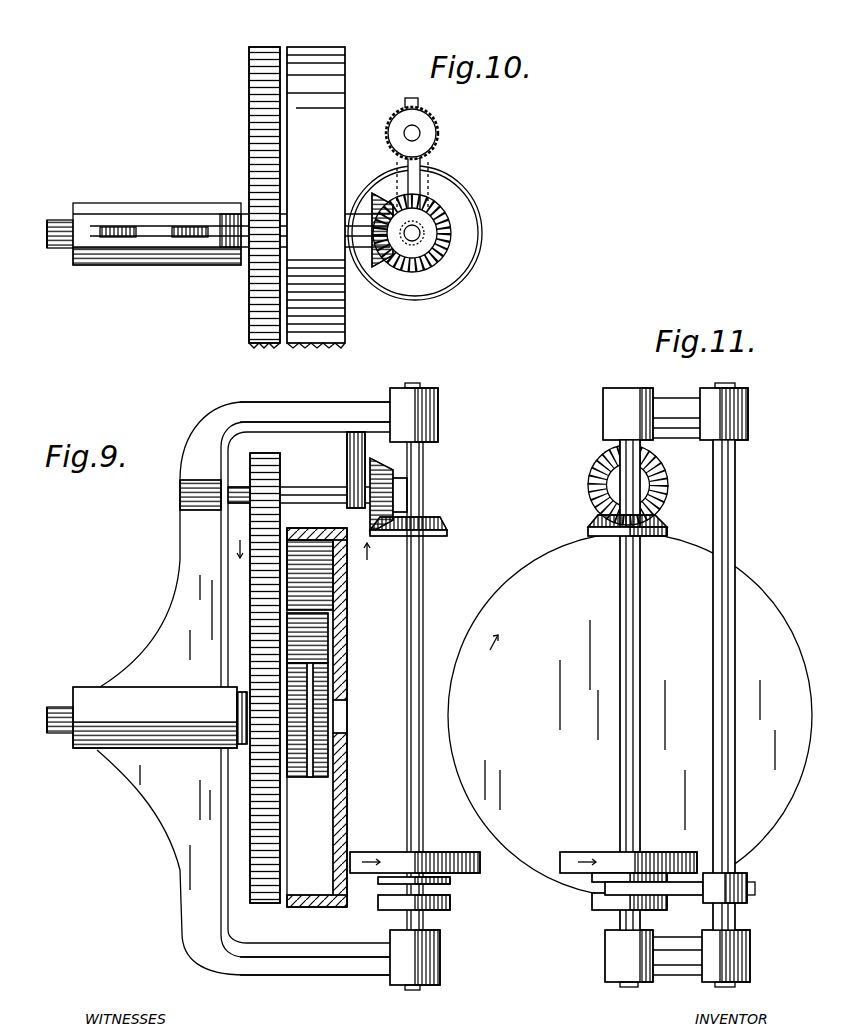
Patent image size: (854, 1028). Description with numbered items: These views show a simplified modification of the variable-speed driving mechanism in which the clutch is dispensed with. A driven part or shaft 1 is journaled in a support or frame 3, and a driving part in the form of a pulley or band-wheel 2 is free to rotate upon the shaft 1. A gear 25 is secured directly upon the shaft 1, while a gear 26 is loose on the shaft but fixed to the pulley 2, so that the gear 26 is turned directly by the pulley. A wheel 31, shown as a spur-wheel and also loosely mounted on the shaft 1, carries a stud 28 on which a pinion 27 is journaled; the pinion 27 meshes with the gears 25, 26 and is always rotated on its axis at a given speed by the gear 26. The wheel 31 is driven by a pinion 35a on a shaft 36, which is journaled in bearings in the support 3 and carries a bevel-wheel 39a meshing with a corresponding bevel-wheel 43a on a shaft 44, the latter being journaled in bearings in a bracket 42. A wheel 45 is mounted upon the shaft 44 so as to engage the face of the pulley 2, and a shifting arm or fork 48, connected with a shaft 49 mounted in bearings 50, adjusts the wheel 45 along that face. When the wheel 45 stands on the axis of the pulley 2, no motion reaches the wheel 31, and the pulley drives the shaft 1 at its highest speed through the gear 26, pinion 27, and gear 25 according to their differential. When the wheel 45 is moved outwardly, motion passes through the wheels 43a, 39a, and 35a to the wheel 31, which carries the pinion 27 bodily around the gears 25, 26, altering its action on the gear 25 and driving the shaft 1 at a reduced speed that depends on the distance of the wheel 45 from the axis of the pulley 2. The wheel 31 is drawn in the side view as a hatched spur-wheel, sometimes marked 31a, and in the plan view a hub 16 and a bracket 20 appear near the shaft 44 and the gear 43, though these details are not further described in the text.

In FIG. 10, the driven part or shaft 1 is at (56, 221).
In FIG. 9, the driven part or shaft 1 is at (56, 736).
In FIG. 10, the pulley or band-wheel 2 is at (316, 197).
In FIG. 9, the pulley or band-wheel 2 is at (324, 717).
In FIG. 11, the pulley or band-wheel 2 is at (630, 715).
In FIG. 10, the support or frame 3 is at (120, 203).
In FIG. 9, the support or frame 3 is at (196, 600).
In FIG. 11, the support or frame 3 is at (603, 398).
In FIG. 9, the hub 16 is at (402, 484).
In FIG. 11, the hub 16 is at (565, 500).
In FIG. 9, the bracket 20 is at (430, 912).
In FIG. 11, the bracket 20 is at (605, 895).
In FIG. 9, the gear 25 is at (306, 778).
In FIG. 9, the gear 26 is at (322, 760).
In FIG. 9, the pinion 27 is at (315, 608).
In FIG. 9, the stud 28 is at (285, 630).
In FIG. 10, the wheel 31 is at (249, 318).
In FIG. 9, the gear 31a is at (268, 905).
In FIG. 10, the pinion 35a is at (250, 200).
In FIG. 9, the pinion 35a is at (280, 478).
In FIG. 9, the shaft 36 is at (322, 487).
In FIG. 10, the bevel-wheel 39a is at (378, 200).
In FIG. 9, the bevel-wheel 39a is at (395, 470).
In FIG. 11, the bevel-wheel 39a is at (592, 475).
In FIG. 10, the bracket 42 is at (425, 186).
In FIG. 9, the bracket 42 is at (315, 688).
In FIG. 10, the gear 43 is at (445, 250).
In FIG. 9, the bevel-wheel 43a is at (435, 537).
In FIG. 11, the bevel-wheel 43a is at (605, 537).
In FIG. 10, the shaft 44 is at (413, 242).
In FIG. 9, the shaft 44 is at (432, 686).
In FIG. 11, the shaft 44 is at (642, 578).
In FIG. 10, the wheel 45 is at (470, 224).
In FIG. 9, the wheel 45 is at (382, 852).
In FIG. 11, the wheel 45 is at (592, 852).
In FIG. 9, the shifting arm or fork 48 is at (452, 889).
In FIG. 11, the shifting arm or fork 48 is at (660, 900).
In FIG. 10, the shaft 49 is at (421, 133).
In FIG. 11, the shaft 49 is at (737, 830).
In FIG. 11, the bearings 50 is at (750, 396).